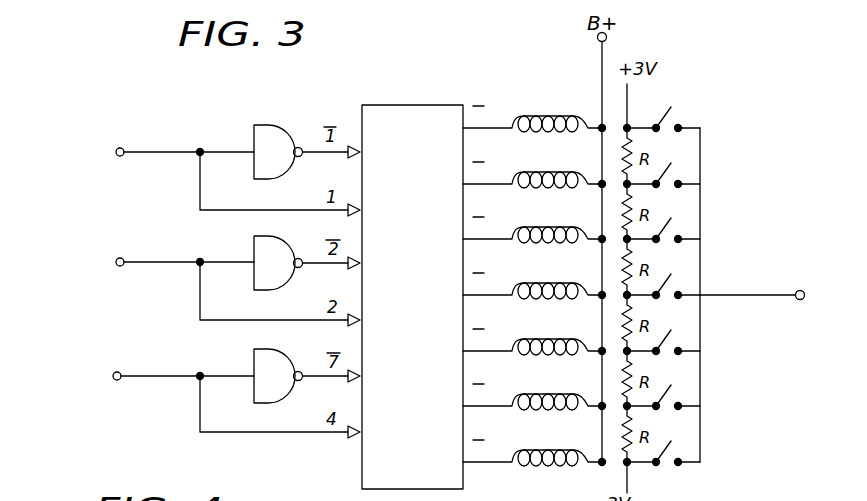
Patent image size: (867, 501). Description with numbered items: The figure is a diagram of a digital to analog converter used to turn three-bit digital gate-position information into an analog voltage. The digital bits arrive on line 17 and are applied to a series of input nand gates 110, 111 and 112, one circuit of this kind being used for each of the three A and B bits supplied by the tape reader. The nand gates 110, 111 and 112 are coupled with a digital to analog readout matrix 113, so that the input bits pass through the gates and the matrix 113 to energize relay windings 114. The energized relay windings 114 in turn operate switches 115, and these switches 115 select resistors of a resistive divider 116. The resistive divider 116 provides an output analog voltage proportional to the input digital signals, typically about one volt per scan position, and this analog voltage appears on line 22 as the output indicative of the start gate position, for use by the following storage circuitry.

The line 17 is at (68, 208).
The input nand gate 110 is at (270, 131).
The input nand gate 111 is at (283, 260).
The input nand gate 112 is at (282, 371).
The digital to analog readout matrix 113 is at (428, 105).
The relay winding 114 is at (558, 114).
The switch 115 is at (672, 170).
The resistive divider 116 is at (645, 266).
The line 22 is at (766, 309).